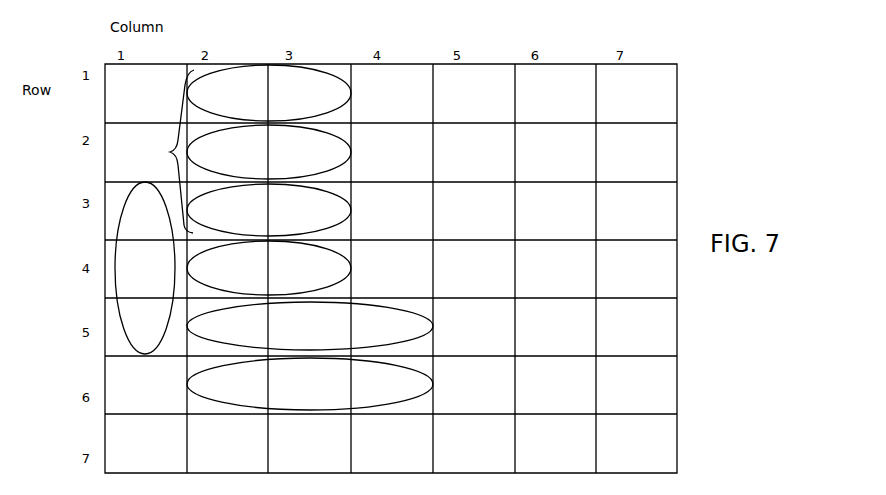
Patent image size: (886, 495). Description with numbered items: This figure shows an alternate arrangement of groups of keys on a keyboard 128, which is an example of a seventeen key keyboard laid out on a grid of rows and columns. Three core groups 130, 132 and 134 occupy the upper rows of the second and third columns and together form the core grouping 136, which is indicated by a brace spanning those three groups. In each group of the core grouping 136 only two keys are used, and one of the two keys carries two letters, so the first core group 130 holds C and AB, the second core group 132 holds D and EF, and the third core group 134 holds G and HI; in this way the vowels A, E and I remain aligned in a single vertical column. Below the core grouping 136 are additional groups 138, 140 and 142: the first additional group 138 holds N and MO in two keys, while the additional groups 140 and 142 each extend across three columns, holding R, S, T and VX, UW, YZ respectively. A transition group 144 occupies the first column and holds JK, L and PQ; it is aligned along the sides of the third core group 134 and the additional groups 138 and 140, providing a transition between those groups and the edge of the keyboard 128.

The keyboard 128 is at (680, 155).
The core group 130 is at (337, 91).
The core group 132 is at (335, 154).
The core group 134 is at (337, 212).
The core grouping 136 is at (167, 152).
The additional group 138 is at (337, 272).
The additional group 140 is at (415, 327).
The additional group 142 is at (415, 385).
The transition group 144 is at (137, 200).